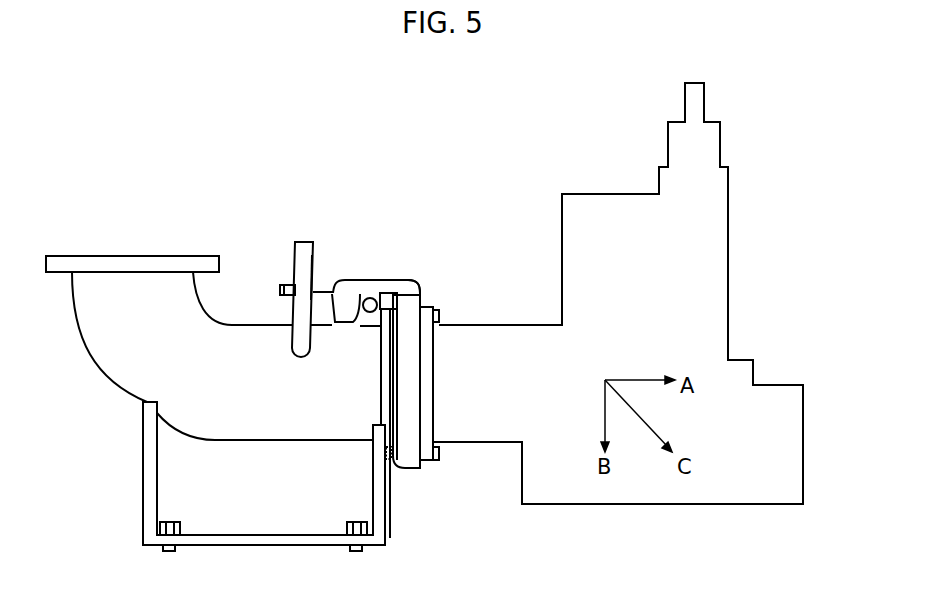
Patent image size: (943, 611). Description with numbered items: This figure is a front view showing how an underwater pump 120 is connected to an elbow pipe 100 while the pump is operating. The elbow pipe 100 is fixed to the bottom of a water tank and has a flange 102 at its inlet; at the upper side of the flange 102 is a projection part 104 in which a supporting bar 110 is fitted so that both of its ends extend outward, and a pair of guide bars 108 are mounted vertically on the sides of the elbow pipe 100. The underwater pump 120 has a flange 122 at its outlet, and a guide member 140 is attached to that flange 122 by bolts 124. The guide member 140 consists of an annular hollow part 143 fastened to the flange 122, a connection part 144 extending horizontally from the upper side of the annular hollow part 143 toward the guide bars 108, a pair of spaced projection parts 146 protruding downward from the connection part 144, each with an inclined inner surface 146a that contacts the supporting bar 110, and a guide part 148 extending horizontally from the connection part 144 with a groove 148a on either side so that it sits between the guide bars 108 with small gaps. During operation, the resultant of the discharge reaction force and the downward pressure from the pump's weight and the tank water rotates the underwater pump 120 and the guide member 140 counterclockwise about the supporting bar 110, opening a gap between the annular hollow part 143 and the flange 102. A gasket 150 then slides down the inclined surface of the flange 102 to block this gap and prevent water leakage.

The elbow pipe 100 is at (92, 353).
The flange 102 is at (382, 393).
The projection part 104 is at (381, 293).
The guide bars 108 is at (300, 274).
The supporting bar 110 is at (365, 313).
The underwater pump 120 is at (597, 215).
The flange 122 is at (431, 382).
The bolts 124 is at (439, 455).
The guide member 140 is at (413, 279).
The annular hollow part 143 is at (407, 462).
The connection part 144 is at (408, 287).
The projection parts 146 is at (345, 302).
The inclined inner surface 146a is at (372, 298).
The guide part 148 is at (280, 291).
The groove 148a is at (315, 288).
The gasket 150 is at (390, 470).